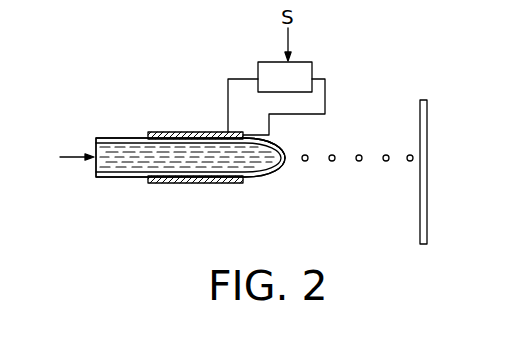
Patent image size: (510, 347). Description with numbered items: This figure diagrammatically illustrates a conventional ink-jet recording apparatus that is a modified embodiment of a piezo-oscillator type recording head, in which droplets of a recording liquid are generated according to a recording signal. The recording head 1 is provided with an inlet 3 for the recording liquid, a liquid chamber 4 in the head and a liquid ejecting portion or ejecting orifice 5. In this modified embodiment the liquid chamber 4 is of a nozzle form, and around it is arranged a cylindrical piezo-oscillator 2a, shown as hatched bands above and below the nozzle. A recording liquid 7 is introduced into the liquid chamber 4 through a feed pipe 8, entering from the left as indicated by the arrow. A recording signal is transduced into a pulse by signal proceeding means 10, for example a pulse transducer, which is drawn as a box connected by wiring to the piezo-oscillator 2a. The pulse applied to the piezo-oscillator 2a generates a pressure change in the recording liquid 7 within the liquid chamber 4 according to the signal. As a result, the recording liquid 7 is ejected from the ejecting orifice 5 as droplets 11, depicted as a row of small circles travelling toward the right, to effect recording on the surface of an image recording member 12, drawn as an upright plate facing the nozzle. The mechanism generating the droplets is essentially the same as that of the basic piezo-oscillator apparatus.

The recording head 1 is at (176, 127).
The piezo-oscillator 2a is at (175, 183).
The inlet 3 is at (142, 140).
The liquid chamber 4 is at (250, 177).
The liquid ejecting portion 5 is at (290, 160).
The recording liquid 7 is at (110, 137).
The feed pipe 8 is at (115, 179).
The signal proceeding means 10 is at (312, 62).
The droplets 11 is at (360, 154).
The image recording member 12 is at (428, 200).